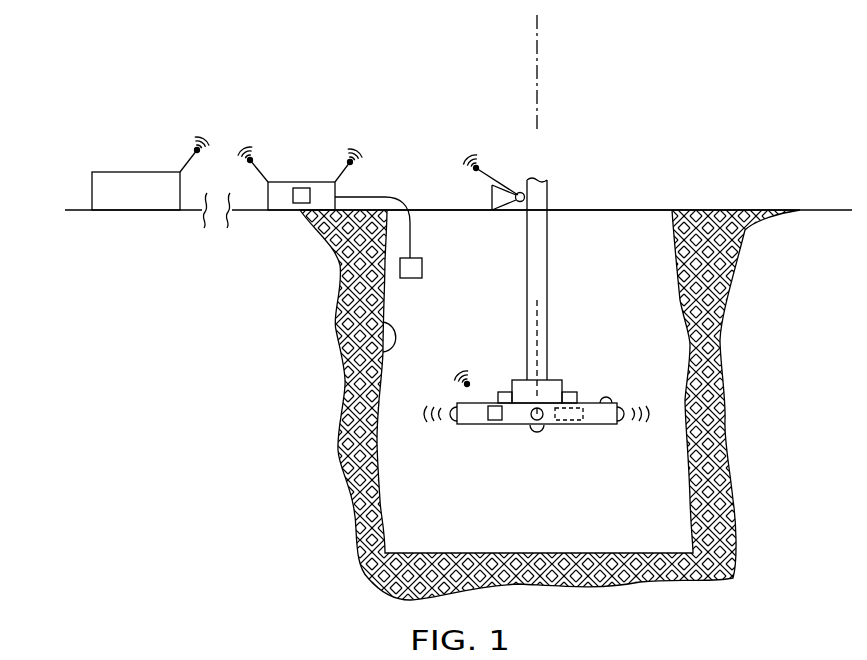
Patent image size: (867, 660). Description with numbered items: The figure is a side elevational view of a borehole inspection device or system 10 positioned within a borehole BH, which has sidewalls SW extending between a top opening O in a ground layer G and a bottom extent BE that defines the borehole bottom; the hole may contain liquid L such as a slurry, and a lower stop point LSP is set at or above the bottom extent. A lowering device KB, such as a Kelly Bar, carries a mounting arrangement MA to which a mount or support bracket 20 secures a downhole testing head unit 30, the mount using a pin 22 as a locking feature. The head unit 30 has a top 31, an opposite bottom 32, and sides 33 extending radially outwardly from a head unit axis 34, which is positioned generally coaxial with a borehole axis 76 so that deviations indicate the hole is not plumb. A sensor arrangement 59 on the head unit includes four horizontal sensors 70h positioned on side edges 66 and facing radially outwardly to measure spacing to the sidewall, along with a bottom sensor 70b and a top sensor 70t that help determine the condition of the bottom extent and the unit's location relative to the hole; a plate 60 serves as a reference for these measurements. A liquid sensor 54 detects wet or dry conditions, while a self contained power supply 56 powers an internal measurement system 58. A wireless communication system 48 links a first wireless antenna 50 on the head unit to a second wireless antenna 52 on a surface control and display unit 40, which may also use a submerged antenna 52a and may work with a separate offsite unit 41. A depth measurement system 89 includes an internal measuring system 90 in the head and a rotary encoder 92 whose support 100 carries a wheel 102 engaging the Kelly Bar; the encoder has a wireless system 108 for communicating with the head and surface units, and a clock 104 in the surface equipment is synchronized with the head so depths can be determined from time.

The borehole inspection device or system 10 is at (338, 92).
The wireless communication system 48 is at (396, 92).
The borehole axis 76 is at (537, 37).
The offsite control and/or display unit 41 is at (130, 172).
The surface control and/or display unit 40 is at (284, 182).
The second wireless antenna 52 is at (349, 160).
The timing device or clock 104 is at (299, 203).
The antenna 52a is at (400, 268).
The wireless system 108 is at (476, 167).
The rotary encoder 92 is at (503, 180).
The depth measurement system 89 is at (520, 197).
The support 100 is at (496, 214).
The wheel 102 is at (520, 203).
The head unit axis 34 is at (537, 332).
The pin 22 is at (572, 392).
The mount 20 is at (553, 381).
The first wireless antenna 50 is at (467, 383).
The top 31 is at (490, 403).
The internal measuring system 90 is at (490, 414).
The side 33 is at (457, 406).
The top sensor 70t is at (605, 399).
The sensor arrangement 59 is at (662, 408).
The side edge 66 is at (624, 404).
The horizontal sensor 70h is at (624, 420).
The downhole testing head unit 30 is at (453, 436).
The plate 60 is at (474, 426).
The bottom 32 is at (484, 426).
The liquid sensor 54 is at (490, 426).
The bottom sensor 70b is at (543, 427).
The self contained power supply 56 is at (585, 422).
The internal measurement system 58 is at (569, 414).
The borehole BH is at (427, 226).
The top opening O is at (568, 228).
The ground layer G is at (722, 210).
The lowering device KB is at (550, 277).
The liquid L is at (434, 321).
The mounting arrangement MA is at (545, 365).
The sidewall SW is at (383, 350).
The lower stop point LSP is at (415, 538).
The bottom extent BE is at (550, 553).